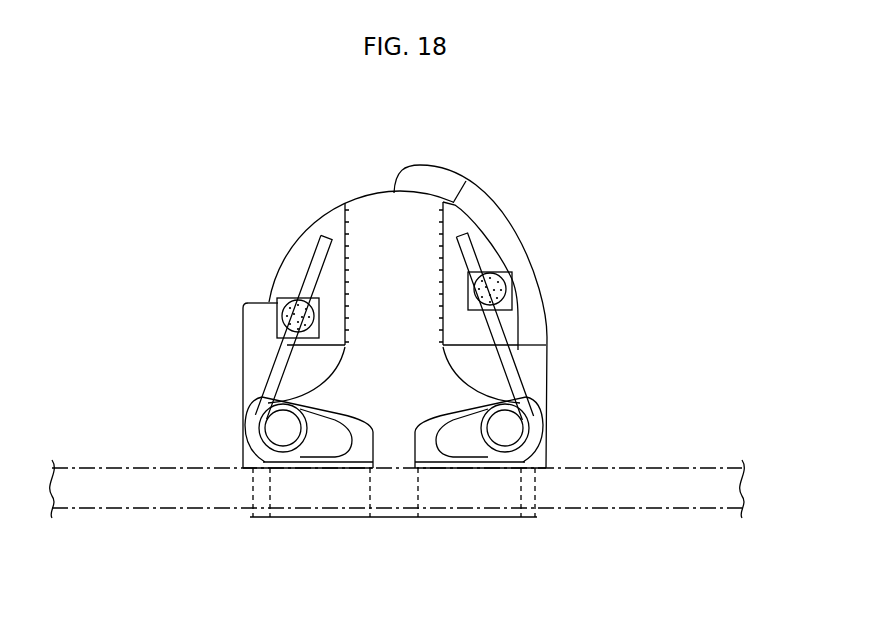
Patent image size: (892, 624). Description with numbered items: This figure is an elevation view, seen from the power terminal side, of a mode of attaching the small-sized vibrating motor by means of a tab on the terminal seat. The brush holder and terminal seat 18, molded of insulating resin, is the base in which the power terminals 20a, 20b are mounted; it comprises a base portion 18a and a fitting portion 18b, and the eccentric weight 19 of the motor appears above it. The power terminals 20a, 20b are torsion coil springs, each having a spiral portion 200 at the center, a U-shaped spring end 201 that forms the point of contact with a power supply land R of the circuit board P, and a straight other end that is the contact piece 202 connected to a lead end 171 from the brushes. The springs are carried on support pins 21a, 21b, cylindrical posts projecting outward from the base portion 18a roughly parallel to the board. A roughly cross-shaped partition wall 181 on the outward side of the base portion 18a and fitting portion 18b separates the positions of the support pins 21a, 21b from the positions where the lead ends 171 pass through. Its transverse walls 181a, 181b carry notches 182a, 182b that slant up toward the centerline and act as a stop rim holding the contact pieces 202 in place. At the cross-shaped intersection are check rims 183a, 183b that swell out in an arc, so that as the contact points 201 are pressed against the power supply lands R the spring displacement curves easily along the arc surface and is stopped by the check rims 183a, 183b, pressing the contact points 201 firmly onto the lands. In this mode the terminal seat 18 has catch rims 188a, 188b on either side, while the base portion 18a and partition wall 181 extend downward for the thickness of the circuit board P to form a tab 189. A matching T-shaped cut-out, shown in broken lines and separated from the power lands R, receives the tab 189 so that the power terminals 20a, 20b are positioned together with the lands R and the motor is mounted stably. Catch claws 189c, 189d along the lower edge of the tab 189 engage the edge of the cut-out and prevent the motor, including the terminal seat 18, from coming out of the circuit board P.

The brush holder and terminal seat 18 is at (327, 200).
The partition wall 181 is at (372, 200).
The base portion 18a is at (250, 375).
The fitting portion 18b is at (463, 182).
The eccentric weight 19 is at (492, 202).
The contact piece 202 is at (297, 277).
The lead ends 171 is at (286, 302).
The power terminal 20a is at (320, 258).
The power terminal 20b is at (515, 297).
The notch 182a is at (252, 306).
The notch 182b is at (520, 332).
The transverse wall 181a is at (267, 340).
The transverse wall 181b is at (527, 343).
The check rim 183a is at (258, 388).
The check rim 183b is at (535, 393).
The support pin 21a is at (283, 428).
The support pin 21b is at (505, 428).
The spiral portion 200 is at (250, 441).
The U-shaped spring end (contact point) 201 is at (343, 462).
The catch rim 188a is at (240, 470).
The catch rim 188b is at (558, 470).
The power supply lands R is at (393, 539).
The tab 189 is at (389, 525).
The catch claw 189c is at (370, 512).
The catch claw 189d is at (420, 512).
The circuit board P is at (118, 497).